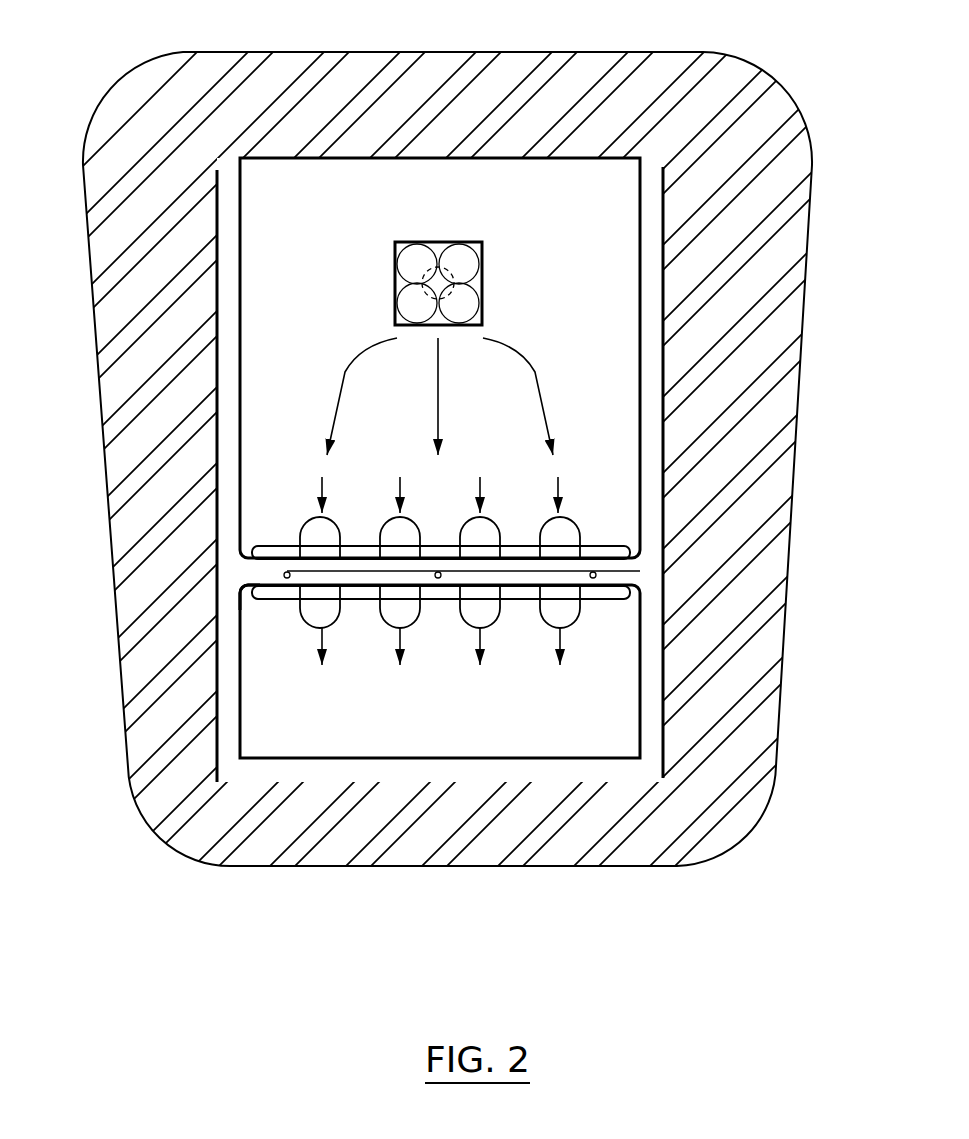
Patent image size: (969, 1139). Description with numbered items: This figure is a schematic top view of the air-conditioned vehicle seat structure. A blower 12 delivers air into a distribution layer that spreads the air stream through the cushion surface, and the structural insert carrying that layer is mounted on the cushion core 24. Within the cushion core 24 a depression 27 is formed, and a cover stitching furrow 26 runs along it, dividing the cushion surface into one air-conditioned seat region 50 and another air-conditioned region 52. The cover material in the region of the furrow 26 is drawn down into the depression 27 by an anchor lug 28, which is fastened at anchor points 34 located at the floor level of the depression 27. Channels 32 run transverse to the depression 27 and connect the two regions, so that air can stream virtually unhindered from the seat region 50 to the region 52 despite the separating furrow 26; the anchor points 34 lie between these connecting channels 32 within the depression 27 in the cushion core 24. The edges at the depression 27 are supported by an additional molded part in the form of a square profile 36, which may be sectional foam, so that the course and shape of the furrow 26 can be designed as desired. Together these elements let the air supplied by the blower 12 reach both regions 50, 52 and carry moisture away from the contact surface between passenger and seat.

The blower 12 is at (467, 240).
The cushion core 24 is at (738, 297).
The cover stitching furrow 26 is at (237, 568).
The depression 27 is at (243, 593).
The anchor lug 28 is at (648, 570).
The channels 32 is at (312, 617).
The anchor points 34 is at (283, 578).
The square profile 36 is at (630, 545).
The air-conditioned seat region 50 is at (627, 263).
The air-conditioned region 52 is at (623, 714).